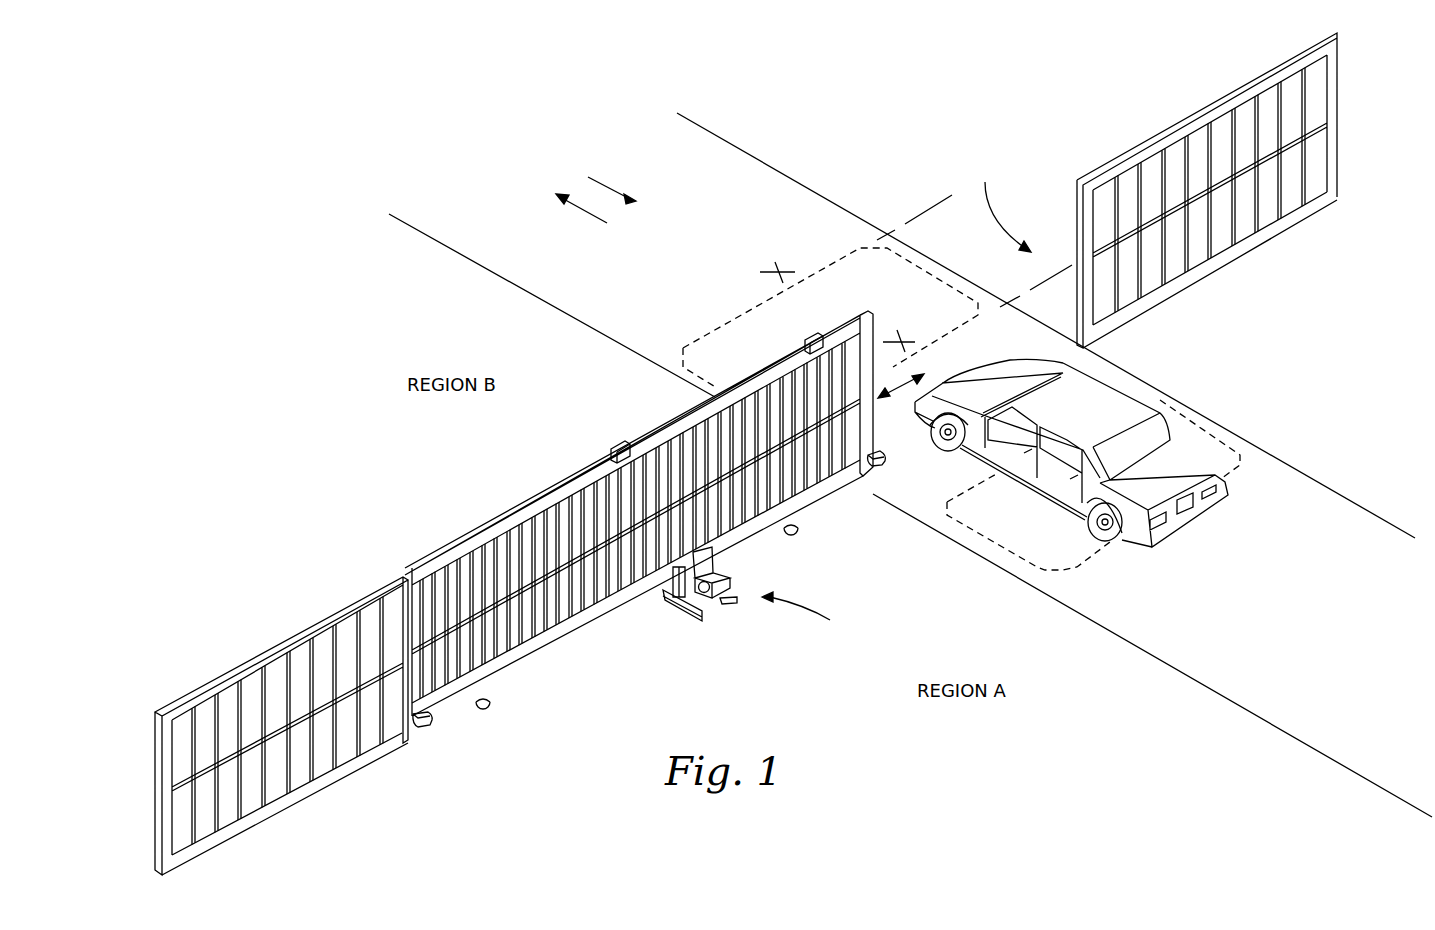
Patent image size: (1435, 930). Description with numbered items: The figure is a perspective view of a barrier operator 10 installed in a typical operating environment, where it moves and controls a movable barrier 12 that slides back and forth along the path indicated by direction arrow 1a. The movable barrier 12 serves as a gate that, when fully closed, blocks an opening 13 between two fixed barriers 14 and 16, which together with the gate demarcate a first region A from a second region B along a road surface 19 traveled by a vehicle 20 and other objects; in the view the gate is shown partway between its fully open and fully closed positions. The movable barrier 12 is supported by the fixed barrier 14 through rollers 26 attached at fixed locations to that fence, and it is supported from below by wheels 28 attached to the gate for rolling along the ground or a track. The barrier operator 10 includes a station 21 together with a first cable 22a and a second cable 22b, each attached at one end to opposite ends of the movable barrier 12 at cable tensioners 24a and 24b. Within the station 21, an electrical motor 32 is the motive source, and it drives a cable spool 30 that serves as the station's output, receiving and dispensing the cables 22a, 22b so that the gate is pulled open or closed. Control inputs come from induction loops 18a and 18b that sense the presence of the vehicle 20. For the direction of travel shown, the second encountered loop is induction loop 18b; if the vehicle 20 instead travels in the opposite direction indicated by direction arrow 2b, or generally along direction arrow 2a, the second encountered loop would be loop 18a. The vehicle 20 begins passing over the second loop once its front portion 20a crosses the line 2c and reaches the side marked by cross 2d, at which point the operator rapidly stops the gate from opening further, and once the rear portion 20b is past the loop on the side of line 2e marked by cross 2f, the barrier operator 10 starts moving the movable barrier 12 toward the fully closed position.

The barrier operator 10 is at (809, 615).
The movable barrier 12 is at (677, 535).
The opening 13 is at (1001, 205).
The fixed barrier 14 is at (258, 655).
The fixed barrier 16 is at (1138, 150).
The induction loop 18a is at (1078, 568).
The induction loop 18b is at (718, 322).
The road surface 19 is at (830, 220).
The direction arrow 1a is at (905, 385).
The vehicle 20 is at (1071, 436).
The front portion 20a is at (973, 367).
The rear portion 20b is at (1226, 492).
The station 21 is at (705, 620).
The first cable 22a is at (543, 655).
The second cable 22b is at (810, 503).
The cable tensioner 24a is at (425, 728).
The cable tensioner 24b is at (884, 463).
The rollers 26 is at (807, 334).
The wheels 28 is at (483, 710).
The direction arrow 2a is at (585, 216).
The direction arrow 2b is at (600, 181).
The line 2c is at (1063, 270).
The cross 2d is at (900, 340).
The line 2e is at (935, 205).
The cross 2f is at (777, 268).
The cable spool 30 is at (663, 593).
The electrical motor 32 is at (712, 600).